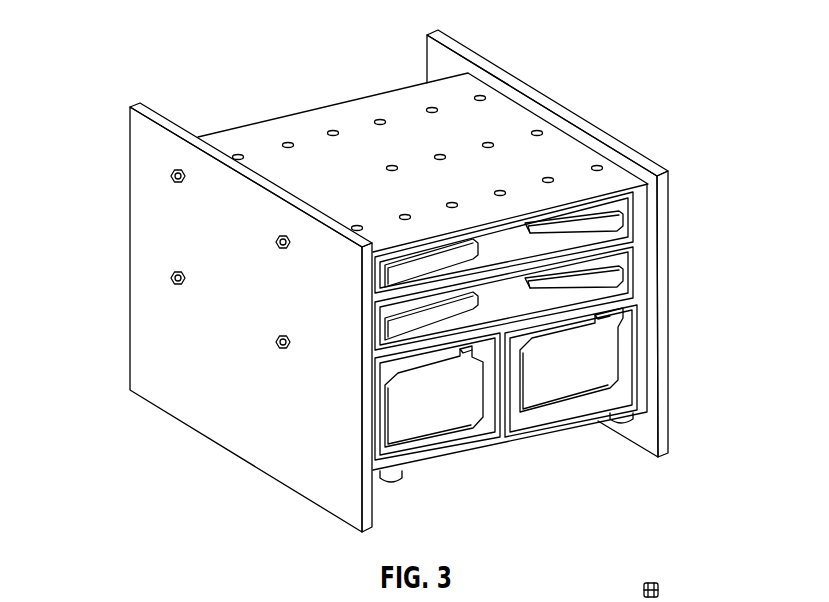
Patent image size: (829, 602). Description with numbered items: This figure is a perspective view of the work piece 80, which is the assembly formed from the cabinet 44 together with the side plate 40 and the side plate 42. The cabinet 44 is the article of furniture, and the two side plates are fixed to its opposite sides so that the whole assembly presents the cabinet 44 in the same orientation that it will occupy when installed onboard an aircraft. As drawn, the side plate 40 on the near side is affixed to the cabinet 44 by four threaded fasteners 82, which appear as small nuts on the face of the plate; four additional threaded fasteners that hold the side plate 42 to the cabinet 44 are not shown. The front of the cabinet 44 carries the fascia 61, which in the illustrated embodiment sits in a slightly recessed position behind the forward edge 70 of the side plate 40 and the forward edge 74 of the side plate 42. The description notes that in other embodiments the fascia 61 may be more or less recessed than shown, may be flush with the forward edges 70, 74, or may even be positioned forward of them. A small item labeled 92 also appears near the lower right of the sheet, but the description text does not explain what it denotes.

The work piece 80 is at (134, 49).
The side plate 40 is at (280, 325).
The side plate 42 is at (578, 243).
The cabinet 44 is at (295, 122).
The fascia 61 is at (636, 218).
The forward edge 70 is at (370, 513).
The forward edge 74 is at (663, 418).
The threaded fasteners 82 is at (170, 178).
The connector 92 is at (690, 598).